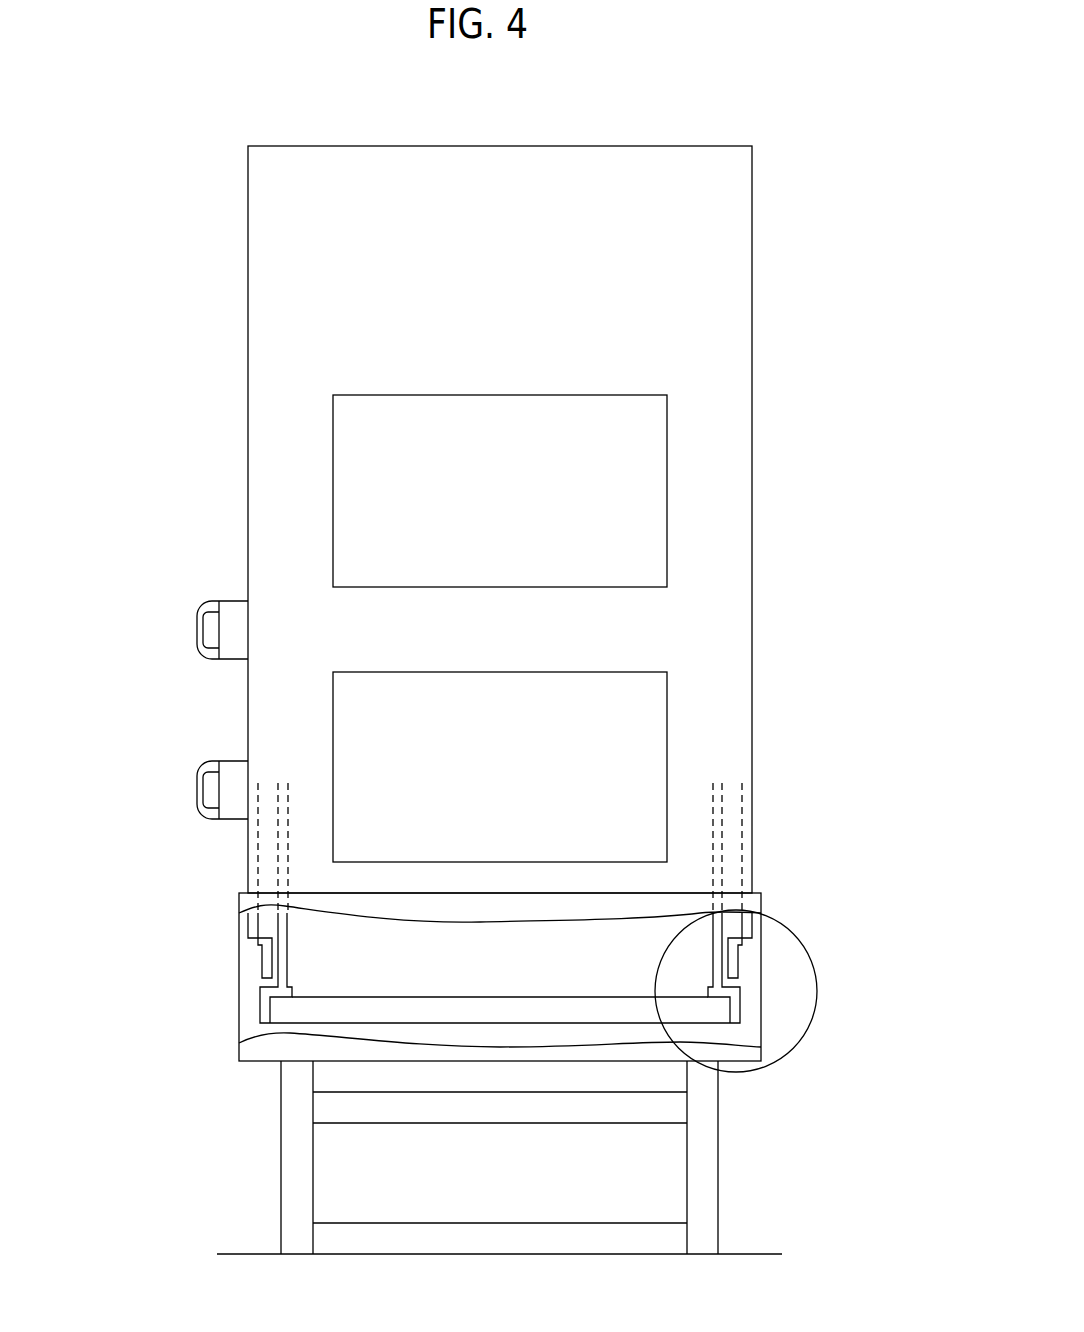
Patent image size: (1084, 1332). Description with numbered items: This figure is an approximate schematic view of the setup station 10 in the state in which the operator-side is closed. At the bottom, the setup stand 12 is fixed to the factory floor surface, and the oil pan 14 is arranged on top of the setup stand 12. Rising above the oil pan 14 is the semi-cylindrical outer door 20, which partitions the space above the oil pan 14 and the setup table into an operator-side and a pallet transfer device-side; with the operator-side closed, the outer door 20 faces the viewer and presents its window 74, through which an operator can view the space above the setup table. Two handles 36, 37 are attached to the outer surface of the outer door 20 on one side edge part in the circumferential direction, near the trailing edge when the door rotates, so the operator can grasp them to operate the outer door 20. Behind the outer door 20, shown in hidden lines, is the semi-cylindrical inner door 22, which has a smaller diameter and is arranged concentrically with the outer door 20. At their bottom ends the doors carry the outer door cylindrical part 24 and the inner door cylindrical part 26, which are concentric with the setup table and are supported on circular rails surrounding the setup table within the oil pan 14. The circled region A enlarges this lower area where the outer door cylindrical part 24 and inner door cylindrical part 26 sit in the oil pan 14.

The setup station 10 is at (833, 229).
The setup stand 12 is at (290, 1162).
The oil pan 14 is at (747, 1057).
The outer door 20 is at (733, 510).
The inner door 22 is at (717, 815).
The outer door cylindrical part 24 is at (733, 963).
The inner door cylindrical part 26 is at (733, 1008).
The handle 36 is at (197, 623).
The handle 37 is at (197, 803).
The window 74 is at (513, 497).
The detail region A is at (777, 914).